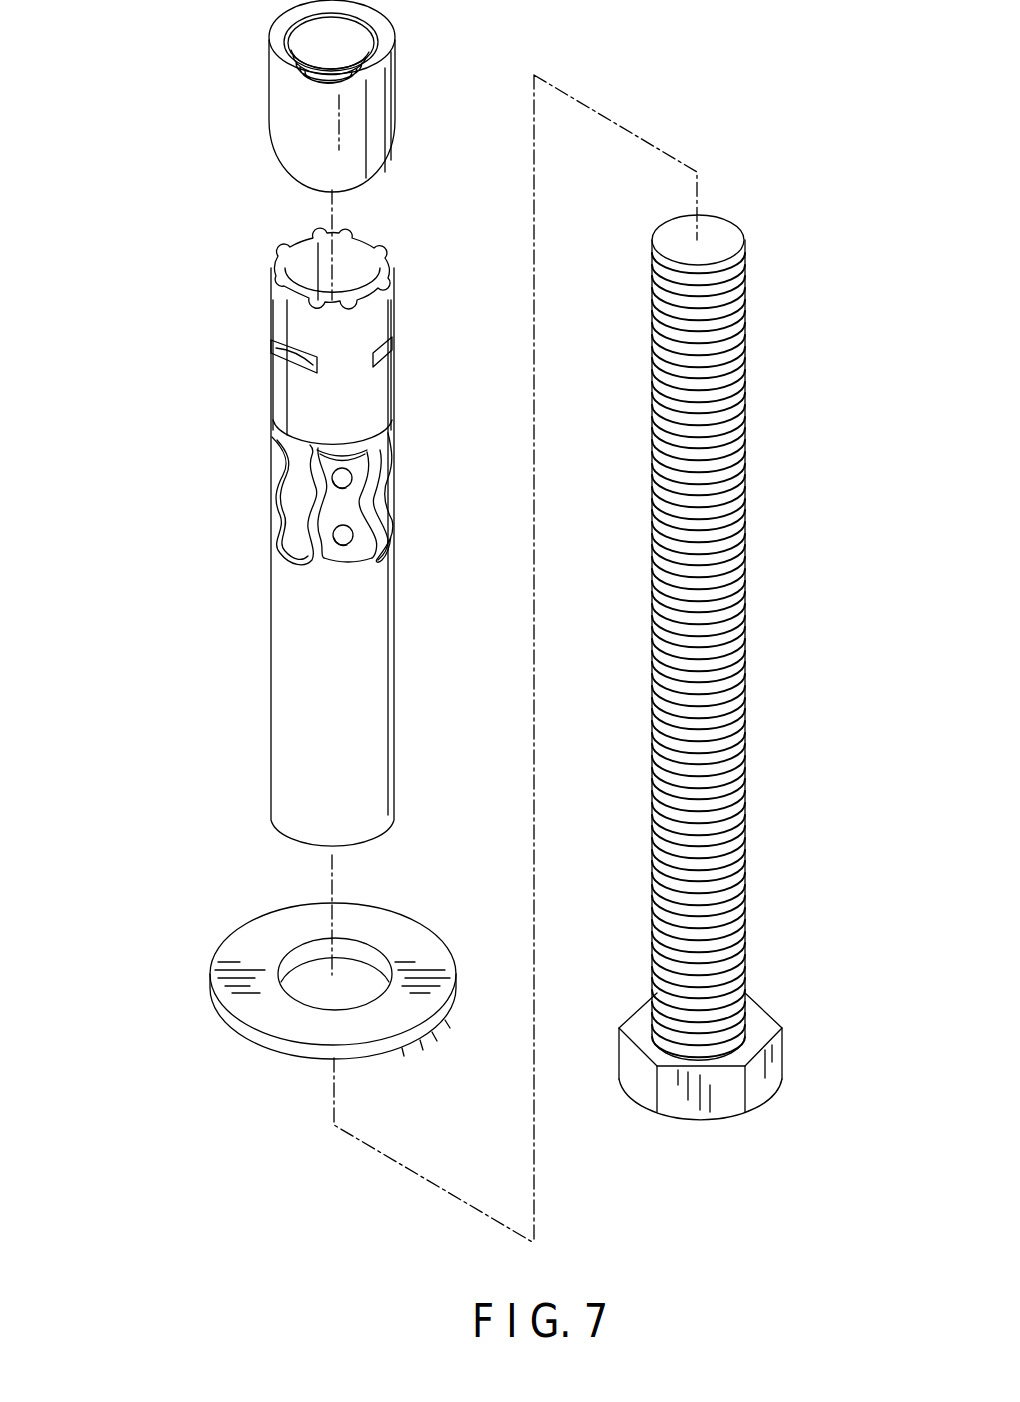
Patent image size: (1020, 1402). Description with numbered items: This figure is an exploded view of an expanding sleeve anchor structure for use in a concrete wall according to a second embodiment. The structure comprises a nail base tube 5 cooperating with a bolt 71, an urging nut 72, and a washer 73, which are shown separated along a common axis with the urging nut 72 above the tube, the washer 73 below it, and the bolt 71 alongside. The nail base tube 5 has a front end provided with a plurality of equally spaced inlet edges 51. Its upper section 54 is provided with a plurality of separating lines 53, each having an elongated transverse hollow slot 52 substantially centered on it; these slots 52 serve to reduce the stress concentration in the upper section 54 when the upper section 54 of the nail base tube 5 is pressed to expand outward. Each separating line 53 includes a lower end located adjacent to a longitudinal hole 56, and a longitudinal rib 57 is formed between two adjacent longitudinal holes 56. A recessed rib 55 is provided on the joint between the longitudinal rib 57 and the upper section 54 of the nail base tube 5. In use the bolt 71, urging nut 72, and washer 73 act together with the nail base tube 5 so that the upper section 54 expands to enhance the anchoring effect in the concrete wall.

The nail base tube 5 is at (236, 590).
The inlet edges 51 is at (276, 258).
The elongated transverse hollow slot 52 is at (285, 365).
The separating lines 53 is at (282, 400).
The upper section 54 is at (400, 270).
The recessed rib 55 is at (352, 452).
The longitudinal hole 56 is at (293, 515).
The longitudinal rib 57 is at (352, 510).
The bolt 71 is at (762, 590).
The urging nut 72 is at (258, 120).
The washer 73 is at (195, 983).